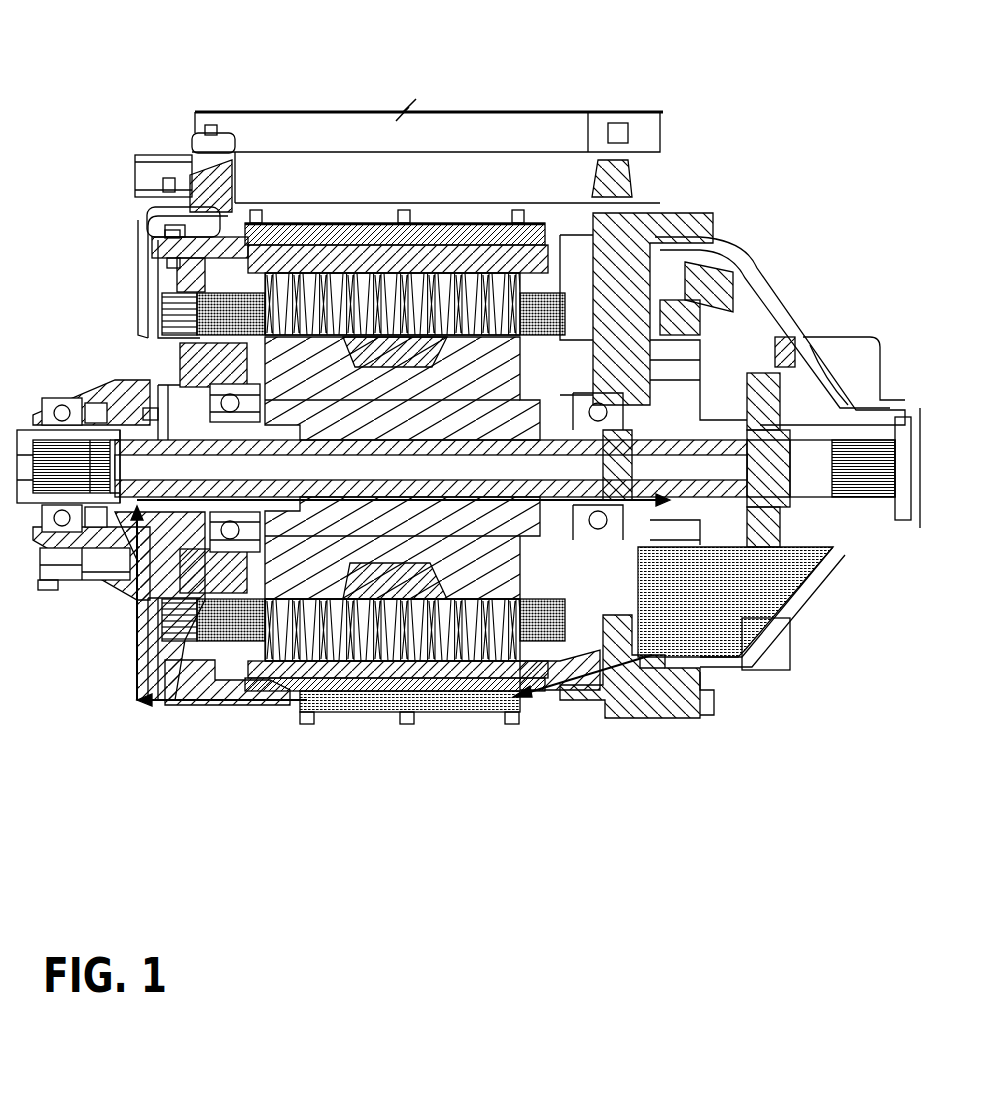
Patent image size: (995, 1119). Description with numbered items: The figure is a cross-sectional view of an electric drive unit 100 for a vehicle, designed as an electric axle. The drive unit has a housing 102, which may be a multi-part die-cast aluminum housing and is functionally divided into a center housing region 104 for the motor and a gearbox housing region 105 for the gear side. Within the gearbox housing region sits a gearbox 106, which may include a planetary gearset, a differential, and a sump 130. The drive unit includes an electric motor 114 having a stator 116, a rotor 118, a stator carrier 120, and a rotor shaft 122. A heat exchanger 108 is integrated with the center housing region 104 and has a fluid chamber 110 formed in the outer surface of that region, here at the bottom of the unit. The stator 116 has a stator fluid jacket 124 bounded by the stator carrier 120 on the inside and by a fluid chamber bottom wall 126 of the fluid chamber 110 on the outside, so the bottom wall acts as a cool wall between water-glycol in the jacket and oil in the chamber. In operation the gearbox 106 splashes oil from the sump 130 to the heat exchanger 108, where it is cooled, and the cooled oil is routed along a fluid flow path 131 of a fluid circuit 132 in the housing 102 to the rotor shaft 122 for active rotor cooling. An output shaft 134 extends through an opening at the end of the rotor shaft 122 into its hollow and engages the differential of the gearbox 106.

The electric drive unit 100 is at (110, 96).
The housing 102 is at (132, 404).
The center housing region 104 is at (129, 264).
The gearbox housing region 105 is at (760, 257).
The gearbox 106 is at (736, 303).
The heat exchanger 108 is at (343, 723).
The fluid chamber 110 is at (300, 712).
The electric motor 114 is at (537, 290).
The stator 116 is at (343, 285).
The rotor 118 is at (207, 135).
The stator carrier 120 is at (375, 267).
The rotor shaft 122 is at (205, 432).
The stator fluid jacket 124 is at (397, 252).
The fluid chamber bottom wall 126 is at (462, 680).
The sump 130 is at (773, 628).
The fluid flow path 131 is at (303, 505).
The fluid circuit 132 is at (572, 682).
The output shaft 134 is at (222, 443).